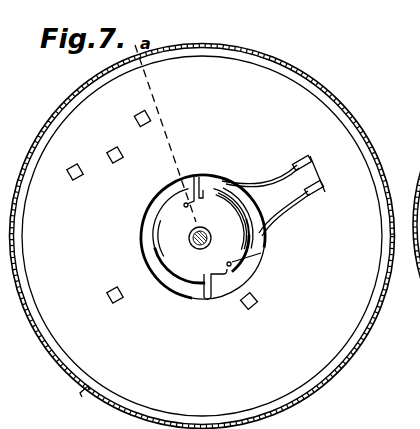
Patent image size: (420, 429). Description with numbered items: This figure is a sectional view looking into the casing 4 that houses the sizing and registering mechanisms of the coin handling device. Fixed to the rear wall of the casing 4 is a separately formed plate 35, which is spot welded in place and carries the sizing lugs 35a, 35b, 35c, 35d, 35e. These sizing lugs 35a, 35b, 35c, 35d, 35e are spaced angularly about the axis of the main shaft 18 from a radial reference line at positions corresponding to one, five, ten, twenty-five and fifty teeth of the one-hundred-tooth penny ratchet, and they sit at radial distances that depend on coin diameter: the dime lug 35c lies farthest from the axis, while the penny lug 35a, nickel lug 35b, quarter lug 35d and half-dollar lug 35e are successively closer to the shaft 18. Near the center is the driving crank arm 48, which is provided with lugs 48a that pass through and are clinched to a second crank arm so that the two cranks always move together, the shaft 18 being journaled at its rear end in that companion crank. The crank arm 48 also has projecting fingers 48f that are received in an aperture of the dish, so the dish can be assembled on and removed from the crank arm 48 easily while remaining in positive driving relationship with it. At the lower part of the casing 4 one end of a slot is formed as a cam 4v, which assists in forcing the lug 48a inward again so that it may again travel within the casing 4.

The casing 4 is at (331, 98).
The cam 4v is at (84, 394).
The plate 35 is at (253, 78).
The sizing lug 35a is at (140, 111).
The sizing lug 35b is at (113, 148).
The sizing lug 35c is at (71, 166).
The sizing lug 35d is at (108, 296).
The sizing lug 35e is at (256, 305).
The main shaft 18 is at (193, 250).
The driving crank arm 48 is at (276, 200).
The lugs 48a is at (195, 200).
The projecting fingers 48f is at (333, 172).